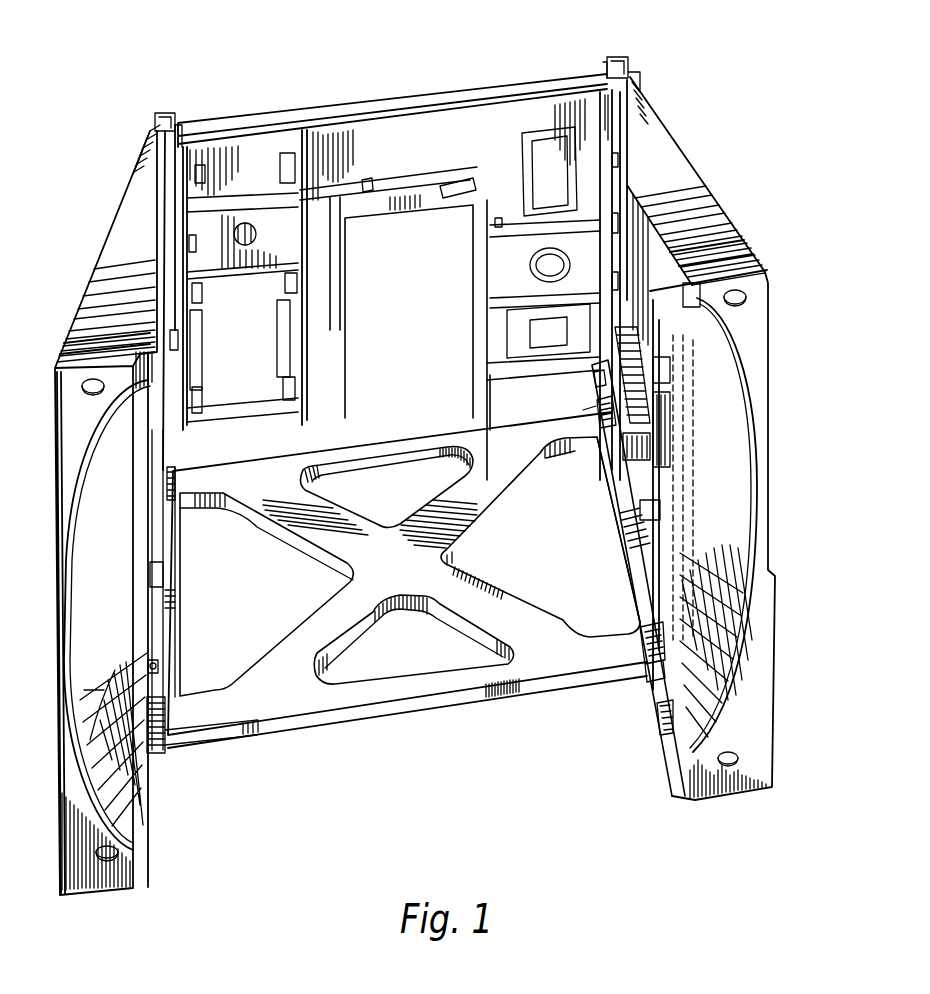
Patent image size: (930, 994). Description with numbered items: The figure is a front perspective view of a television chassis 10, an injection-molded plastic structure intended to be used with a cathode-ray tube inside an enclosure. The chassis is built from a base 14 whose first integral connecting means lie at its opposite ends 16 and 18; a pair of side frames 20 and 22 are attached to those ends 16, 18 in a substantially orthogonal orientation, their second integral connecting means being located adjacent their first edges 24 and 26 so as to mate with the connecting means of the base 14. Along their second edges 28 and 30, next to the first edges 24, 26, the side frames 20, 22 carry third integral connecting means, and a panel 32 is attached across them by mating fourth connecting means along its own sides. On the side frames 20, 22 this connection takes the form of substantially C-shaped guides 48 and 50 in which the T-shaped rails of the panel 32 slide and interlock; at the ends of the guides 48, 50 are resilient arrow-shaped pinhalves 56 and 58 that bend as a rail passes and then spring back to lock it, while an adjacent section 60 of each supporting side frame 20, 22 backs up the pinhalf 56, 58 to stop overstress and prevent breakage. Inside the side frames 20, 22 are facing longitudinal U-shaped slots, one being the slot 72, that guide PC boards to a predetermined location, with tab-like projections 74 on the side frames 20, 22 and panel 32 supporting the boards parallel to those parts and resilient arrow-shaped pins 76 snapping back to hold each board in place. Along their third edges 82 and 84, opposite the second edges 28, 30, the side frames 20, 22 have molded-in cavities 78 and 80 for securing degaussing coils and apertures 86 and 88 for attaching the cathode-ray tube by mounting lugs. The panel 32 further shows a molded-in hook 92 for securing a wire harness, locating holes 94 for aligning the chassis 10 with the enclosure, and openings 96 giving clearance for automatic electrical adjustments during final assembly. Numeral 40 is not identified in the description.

The television chassis 10 is at (365, 748).
The base 14 is at (440, 716).
The opposite end of base 16 is at (577, 458).
The opposite end of base 18 is at (190, 512).
The side frame 20 is at (680, 128).
The side frame 22 is at (120, 200).
The first edge of side frame 24 is at (612, 567).
The first edge of side frame 26 is at (172, 608).
The second edge of side frame 28 is at (618, 55).
The second edge of side frame 30 is at (167, 112).
The panel 32 is at (420, 95).
The mounting block 40 is at (177, 490).
The C-shaped guide 48 is at (605, 62).
The C-shaped guide 50 is at (178, 124).
The arrow-shaped pinhalf 56 is at (640, 70).
The arrow-shaped pinhalf 58 is at (153, 130).
The section of side frame 60 is at (147, 155).
The U-shaped slot 72 is at (158, 663).
The tab-like projection 74 is at (175, 342).
The arrow-shaped pin 76 is at (205, 173).
The molded-in cavity 78 is at (750, 493).
The molded-in cavity 80 is at (70, 612).
The third edge of side frame 82 is at (760, 278).
The third edge of side frame 84 is at (55, 372).
The aperture 86 is at (748, 298).
The aperture 88 is at (82, 389).
The molded-in hook 92 is at (372, 185).
The locating hole 94 is at (530, 249).
The opening 96 is at (550, 355).